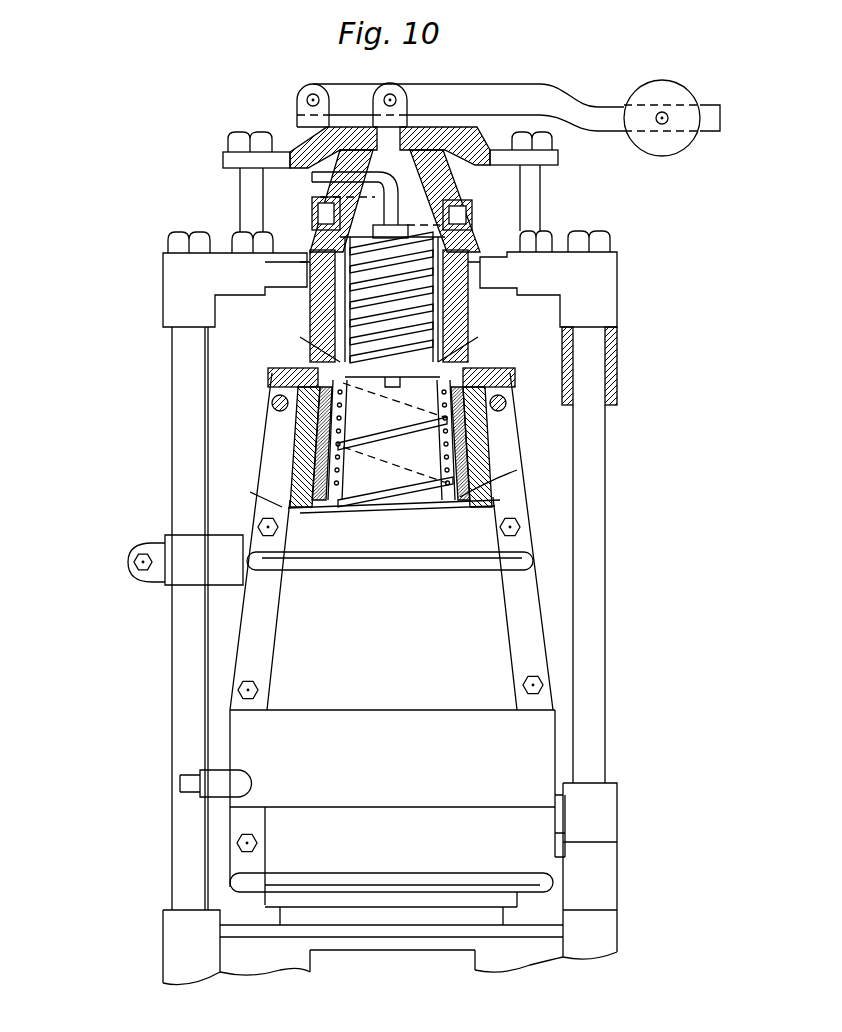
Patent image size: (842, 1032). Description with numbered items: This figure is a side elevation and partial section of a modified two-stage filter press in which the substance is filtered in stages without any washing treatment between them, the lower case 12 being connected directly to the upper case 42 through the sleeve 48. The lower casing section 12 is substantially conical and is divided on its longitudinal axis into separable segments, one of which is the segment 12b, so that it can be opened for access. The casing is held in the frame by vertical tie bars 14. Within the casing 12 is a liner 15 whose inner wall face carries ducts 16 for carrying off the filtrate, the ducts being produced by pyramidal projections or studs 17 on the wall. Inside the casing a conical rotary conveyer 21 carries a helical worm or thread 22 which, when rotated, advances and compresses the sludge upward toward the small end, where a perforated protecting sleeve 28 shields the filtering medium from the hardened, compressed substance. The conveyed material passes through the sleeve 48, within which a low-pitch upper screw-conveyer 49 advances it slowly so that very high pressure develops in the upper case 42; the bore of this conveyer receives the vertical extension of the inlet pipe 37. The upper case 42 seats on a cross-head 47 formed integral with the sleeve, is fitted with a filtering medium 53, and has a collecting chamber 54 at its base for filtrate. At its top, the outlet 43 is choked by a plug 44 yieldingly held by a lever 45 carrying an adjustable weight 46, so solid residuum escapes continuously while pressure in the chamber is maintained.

The base section of casing 12 is at (534, 566).
The separable segment of casing 12b is at (396, 632).
The vertical tie bars 14 is at (190, 481).
The liner 15 is at (305, 388).
The ducts 16 is at (322, 416).
The pyramidal projections or studs 17 is at (300, 478).
The rotary conveyer 21 is at (396, 462).
The worm or thread 22 is at (387, 505).
The protecting sleeve 28 is at (332, 442).
The inlet pipe 37 is at (312, 178).
The upper casing 42 is at (438, 162).
The outlet 43 is at (408, 132).
The plug 44 is at (398, 99).
The lever 45 is at (497, 92).
The adjustable weight 46 is at (672, 66).
The cross-head 47 is at (487, 262).
The sleeve 48 is at (320, 308).
The upper screw-conveyer 49 is at (445, 309).
The filtering medium 53 is at (395, 210).
The collecting chamber 54 is at (470, 204).